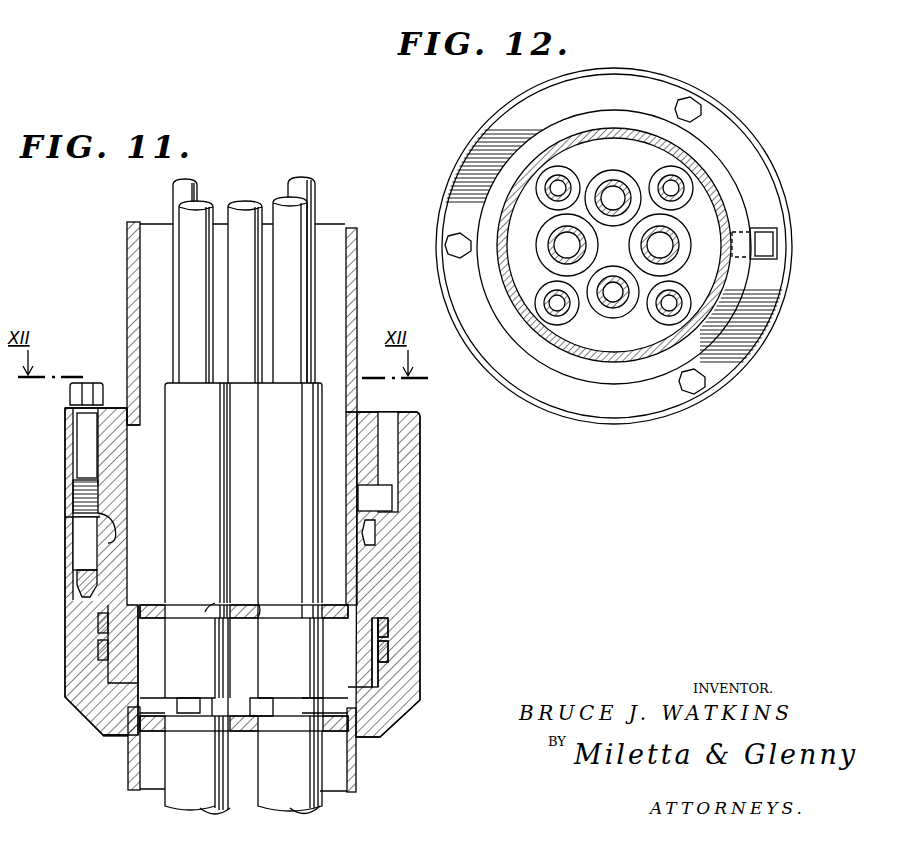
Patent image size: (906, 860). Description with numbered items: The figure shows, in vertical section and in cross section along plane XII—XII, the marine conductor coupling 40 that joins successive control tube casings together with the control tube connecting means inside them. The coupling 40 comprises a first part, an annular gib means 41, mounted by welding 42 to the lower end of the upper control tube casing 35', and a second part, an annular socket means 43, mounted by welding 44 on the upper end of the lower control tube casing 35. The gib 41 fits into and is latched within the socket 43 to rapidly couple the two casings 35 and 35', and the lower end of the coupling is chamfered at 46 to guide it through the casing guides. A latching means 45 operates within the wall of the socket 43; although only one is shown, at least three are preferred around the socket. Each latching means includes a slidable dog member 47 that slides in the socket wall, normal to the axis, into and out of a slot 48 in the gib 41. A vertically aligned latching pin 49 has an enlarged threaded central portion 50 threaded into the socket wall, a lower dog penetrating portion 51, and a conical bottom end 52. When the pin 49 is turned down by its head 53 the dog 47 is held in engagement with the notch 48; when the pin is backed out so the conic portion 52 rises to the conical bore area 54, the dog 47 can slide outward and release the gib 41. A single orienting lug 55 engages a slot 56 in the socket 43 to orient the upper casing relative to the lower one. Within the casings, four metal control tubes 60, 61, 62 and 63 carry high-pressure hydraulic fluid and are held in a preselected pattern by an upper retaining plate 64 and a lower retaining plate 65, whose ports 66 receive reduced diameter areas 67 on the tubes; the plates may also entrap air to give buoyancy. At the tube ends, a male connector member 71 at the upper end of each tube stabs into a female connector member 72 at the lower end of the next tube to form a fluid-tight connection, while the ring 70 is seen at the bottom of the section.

In FIG. 11, the control tube casing 35 is at (373, 750).
In FIG. 11, the control tube casing 35' is at (214, 323).
In FIG. 12, the control tube casing 35' is at (661, 245).
In FIG. 11, the marine conductor coupling 40 is at (432, 552).
In FIG. 11, the annular gib means 41 is at (368, 440).
In FIG. 12, the annular gib means 41 is at (562, 365).
In FIG. 11, the welding 42 is at (125, 400).
In FIG. 11, the annular socket means 43 is at (407, 620).
In FIG. 12, the annular socket means 43 is at (484, 128).
In FIG. 11, the welding 44 is at (128, 741).
In FIG. 11, the latching means 45 is at (42, 429).
In FIG. 12, the latching means 45 is at (778, 132).
In FIG. 11, the chamfered lower end 46 is at (398, 728).
In FIG. 11, the slidable dog member 47 is at (67, 555).
In FIG. 11, the slot 48 is at (114, 540).
In FIG. 11, the latching pin 49 is at (83, 446).
In FIG. 11, the enlarged threaded central portion 50 is at (78, 488).
In FIG. 11, the dog penetrating portion 51 is at (82, 544).
In FIG. 11, the conical bottom end 52 is at (77, 576).
In FIG. 11, the head 53 is at (83, 381).
In FIG. 12, the head 53 is at (694, 108).
In FIG. 11, the conical bore area 54 is at (66, 522).
In FIG. 11, the orienting lug 55 is at (380, 498).
In FIG. 12, the orienting lug 55 is at (765, 243).
In FIG. 11, the slot 56 is at (390, 460).
In FIG. 12, the slot 56 is at (775, 262).
In FIG. 11, the control tube 60 is at (213, 222).
In FIG. 12, the control tube 60 is at (563, 240).
In FIG. 11, the control tube 61 is at (243, 217).
In FIG. 12, the control tube 61 is at (613, 185).
In FIG. 11, the control tube 62 is at (298, 216).
In FIG. 12, the control tube 62 is at (657, 245).
In FIG. 12, the control tube 63 is at (612, 305).
In FIG. 11, the upper retaining plate 64 is at (355, 724).
In FIG. 11, the lower retaining plate 65 is at (350, 612).
In FIG. 12, the lower retaining plate 65 is at (652, 338).
In FIG. 11, the ports 66 is at (220, 608).
In FIG. 11, the reduced diameter areas 67 is at (290, 612).
In FIG. 11, the retaining ring 70 is at (118, 787).
In FIG. 11, the male connector member 71 is at (243, 772).
In FIG. 11, the female connector member 72 is at (244, 667).
In FIG. 12, the female connector member 72 is at (720, 296).